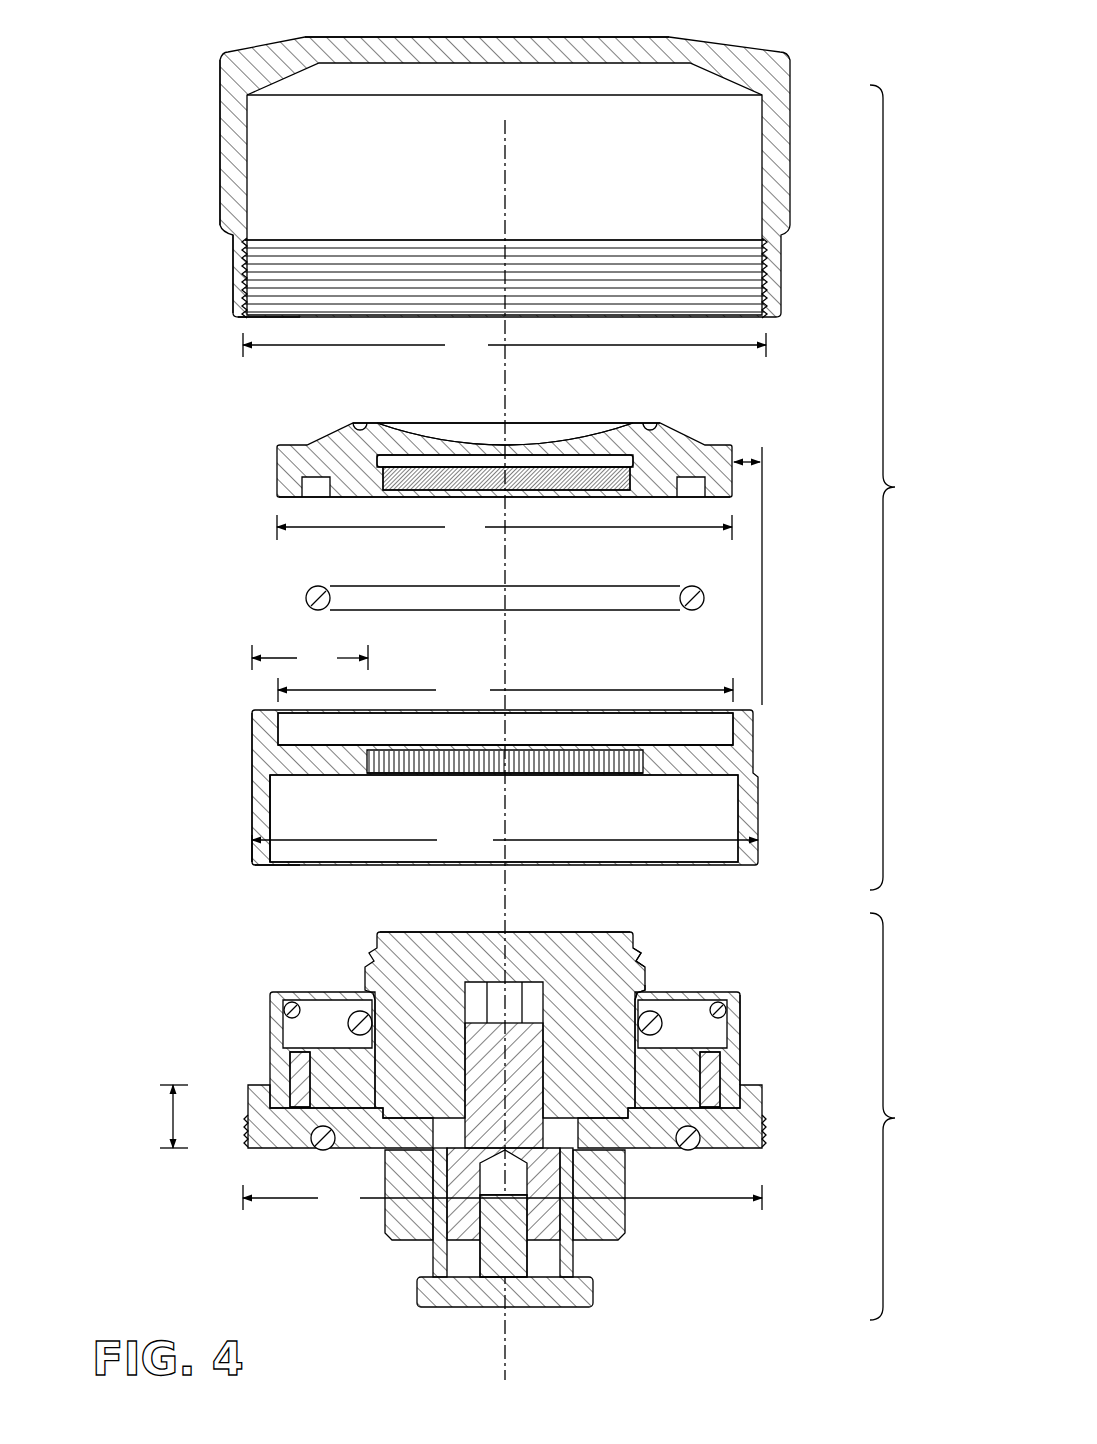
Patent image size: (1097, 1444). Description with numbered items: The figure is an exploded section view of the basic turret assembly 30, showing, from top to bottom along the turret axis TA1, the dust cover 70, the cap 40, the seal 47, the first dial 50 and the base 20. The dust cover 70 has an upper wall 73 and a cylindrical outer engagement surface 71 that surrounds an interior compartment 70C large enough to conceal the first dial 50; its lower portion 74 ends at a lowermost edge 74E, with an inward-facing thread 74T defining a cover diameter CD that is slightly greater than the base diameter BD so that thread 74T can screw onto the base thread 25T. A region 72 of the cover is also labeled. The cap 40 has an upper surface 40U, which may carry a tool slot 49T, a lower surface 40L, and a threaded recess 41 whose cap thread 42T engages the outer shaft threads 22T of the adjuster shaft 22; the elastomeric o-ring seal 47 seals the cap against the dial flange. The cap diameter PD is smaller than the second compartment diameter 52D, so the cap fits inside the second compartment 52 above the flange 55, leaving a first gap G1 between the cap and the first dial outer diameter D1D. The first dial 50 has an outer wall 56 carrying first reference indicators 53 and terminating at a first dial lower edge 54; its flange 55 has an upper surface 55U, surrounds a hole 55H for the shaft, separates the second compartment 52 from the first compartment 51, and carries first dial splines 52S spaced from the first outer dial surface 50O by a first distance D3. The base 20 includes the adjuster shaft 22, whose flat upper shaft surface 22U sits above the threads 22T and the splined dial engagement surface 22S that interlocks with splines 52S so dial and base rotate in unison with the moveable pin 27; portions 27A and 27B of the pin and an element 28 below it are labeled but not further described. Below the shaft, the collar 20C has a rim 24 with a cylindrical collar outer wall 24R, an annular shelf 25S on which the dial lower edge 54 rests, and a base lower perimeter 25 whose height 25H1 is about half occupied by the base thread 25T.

The base 20 is at (210, 1055).
The collar 20C is at (757, 1030).
The adjuster shaft 22 is at (548, 997).
The upper shaft surface 22U is at (531, 931).
The outer shaft threads 22T is at (644, 955).
The dial engagement surface 22S is at (648, 992).
The rim 24 is at (459, 1025).
The collar outer wall 24R is at (270, 1012).
The base lower perimeter 25 is at (417, 1130).
The shelf 25S is at (272, 1080).
The base thread 25T is at (246, 1142).
The lower perimeter height 25H1 is at (128, 1116).
The moveable pin 27 is at (573, 1179).
The shaft nut 27A is at (528, 1240).
The shaft lower portion 27B is at (527, 1252).
The base plate 28 is at (440, 1308).
The basic turret assembly 30 is at (498, 674).
The cap 40 is at (501, 536).
The cap upper surface 40U is at (392, 424).
The cap lower surface 40L is at (712, 498).
The threaded recess 41 is at (512, 465).
The cap thread 42T is at (637, 478).
The tool slot 49T is at (547, 422).
The seal 47 is at (318, 599).
The first dial 50 is at (455, 776).
The first outer dial surface 50O is at (248, 730).
The first compartment 51 is at (598, 818).
The second compartment 52 is at (470, 738).
The first dial splines 52S is at (612, 776).
The first reference indicators 53 is at (262, 845).
The first dial lower edge 54 is at (262, 864).
The flange 55 is at (466, 709).
The flange hole 55H is at (582, 760).
The flange upper surface 55U is at (662, 742).
The first dial outer wall 56 is at (262, 803).
The dust cover 70 is at (461, 180).
The interior compartment 70C is at (607, 179).
The outer engagement surface 71 is at (228, 135).
The cap threaded portion 72 is at (216, 250).
The upper wall 73 is at (376, 37).
The lower portion 74 is at (232, 290).
The cover thread 74T is at (250, 250).
The lowermost edge 74E is at (237, 318).
The first gap G1 is at (752, 458).
The turret axis TA1 is at (507, 1328).
The cover diameter CD is at (504, 345).
The cap diameter PD is at (504, 527).
The first distance D3 is at (310, 657).
The second compartment diameter 52D is at (505, 690).
The first dial outer diameter D1D is at (505, 840).
The base diameter BD is at (502, 1197).